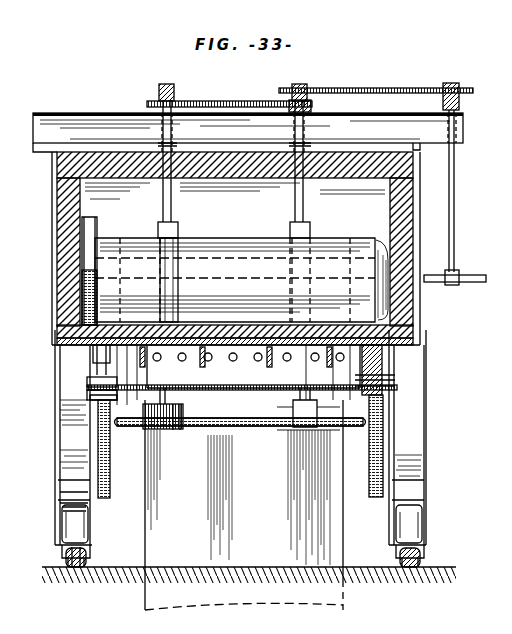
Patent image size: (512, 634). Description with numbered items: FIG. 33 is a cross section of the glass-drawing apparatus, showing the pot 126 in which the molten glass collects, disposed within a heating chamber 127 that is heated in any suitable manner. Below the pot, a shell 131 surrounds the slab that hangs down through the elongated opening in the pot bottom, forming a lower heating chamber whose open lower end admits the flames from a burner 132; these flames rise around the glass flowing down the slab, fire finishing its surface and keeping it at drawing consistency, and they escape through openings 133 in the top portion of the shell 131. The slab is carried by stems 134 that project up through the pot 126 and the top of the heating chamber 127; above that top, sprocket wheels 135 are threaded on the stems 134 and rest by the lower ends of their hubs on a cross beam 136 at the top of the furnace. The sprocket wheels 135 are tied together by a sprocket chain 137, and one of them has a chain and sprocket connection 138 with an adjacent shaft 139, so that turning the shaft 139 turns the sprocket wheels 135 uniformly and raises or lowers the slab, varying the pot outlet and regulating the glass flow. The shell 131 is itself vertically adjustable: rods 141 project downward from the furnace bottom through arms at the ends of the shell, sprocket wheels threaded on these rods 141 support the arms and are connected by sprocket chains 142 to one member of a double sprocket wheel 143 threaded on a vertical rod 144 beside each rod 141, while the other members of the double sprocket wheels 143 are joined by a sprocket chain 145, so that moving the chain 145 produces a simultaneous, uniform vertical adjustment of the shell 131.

The pot 126 is at (241, 280).
The heating chamber 127 is at (236, 248).
The shell 131 is at (238, 375).
The burner 132 is at (283, 408).
The openings 133 is at (236, 366).
The stems 134 is at (161, 212).
The sprocket wheels 135 is at (175, 110).
The cross beam 136 is at (115, 118).
The sprocket chain 137 is at (232, 93).
The chain and sprocket connection 138 is at (365, 92).
The shaft 139 is at (455, 185).
The rods 141 is at (108, 479).
The sprocket chains 142 is at (87, 380).
The double sprocket wheel 143 is at (87, 396).
The vertical rod 144 is at (118, 437).
The sprocket chain 145 is at (247, 392).